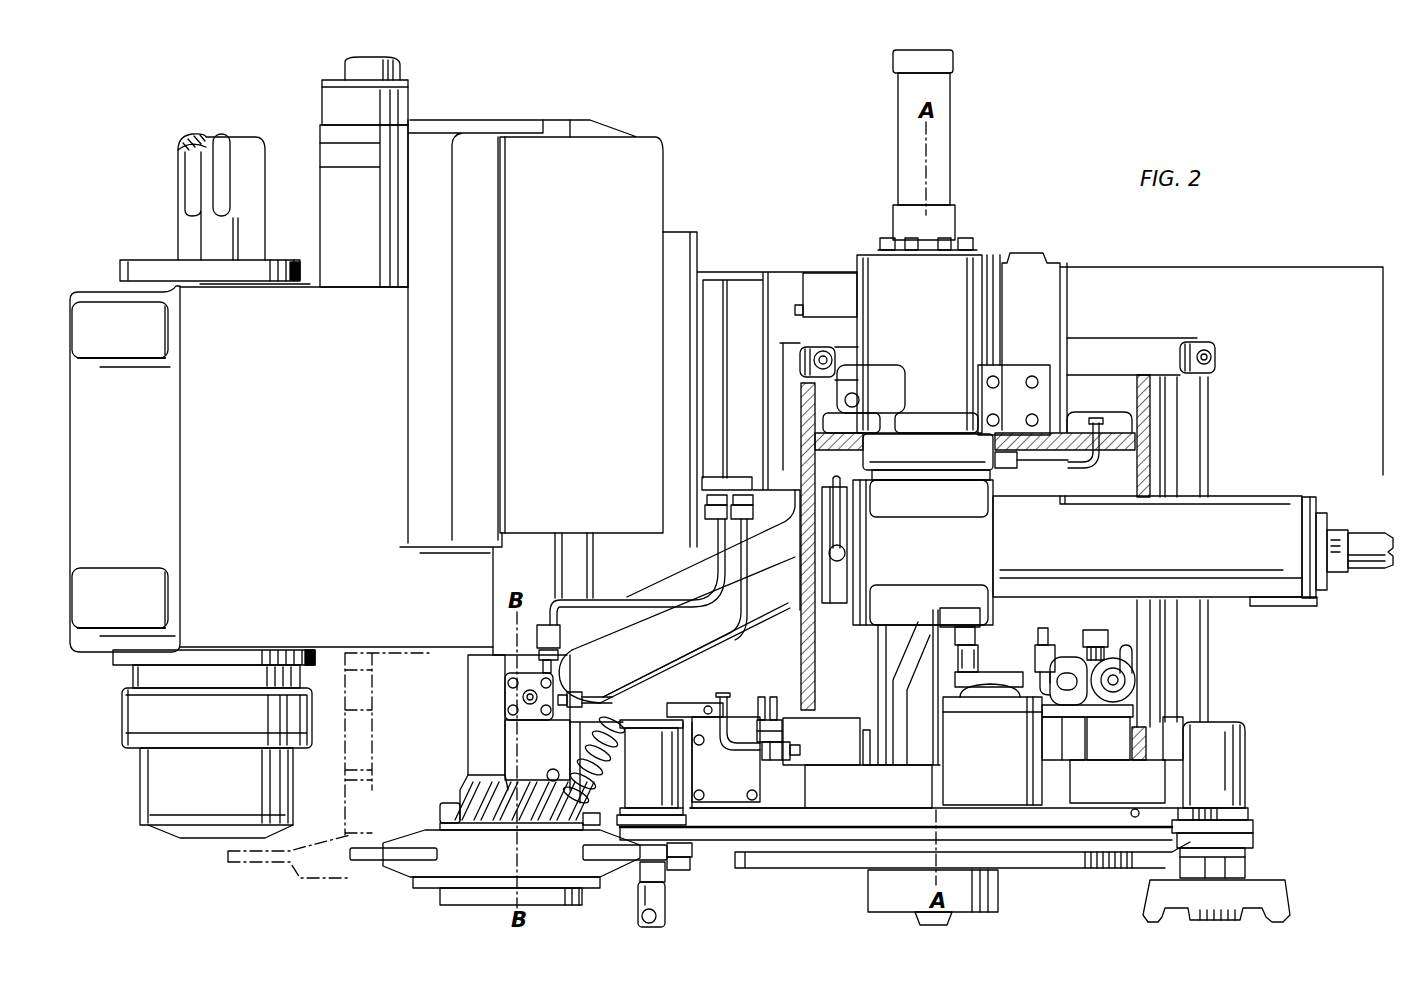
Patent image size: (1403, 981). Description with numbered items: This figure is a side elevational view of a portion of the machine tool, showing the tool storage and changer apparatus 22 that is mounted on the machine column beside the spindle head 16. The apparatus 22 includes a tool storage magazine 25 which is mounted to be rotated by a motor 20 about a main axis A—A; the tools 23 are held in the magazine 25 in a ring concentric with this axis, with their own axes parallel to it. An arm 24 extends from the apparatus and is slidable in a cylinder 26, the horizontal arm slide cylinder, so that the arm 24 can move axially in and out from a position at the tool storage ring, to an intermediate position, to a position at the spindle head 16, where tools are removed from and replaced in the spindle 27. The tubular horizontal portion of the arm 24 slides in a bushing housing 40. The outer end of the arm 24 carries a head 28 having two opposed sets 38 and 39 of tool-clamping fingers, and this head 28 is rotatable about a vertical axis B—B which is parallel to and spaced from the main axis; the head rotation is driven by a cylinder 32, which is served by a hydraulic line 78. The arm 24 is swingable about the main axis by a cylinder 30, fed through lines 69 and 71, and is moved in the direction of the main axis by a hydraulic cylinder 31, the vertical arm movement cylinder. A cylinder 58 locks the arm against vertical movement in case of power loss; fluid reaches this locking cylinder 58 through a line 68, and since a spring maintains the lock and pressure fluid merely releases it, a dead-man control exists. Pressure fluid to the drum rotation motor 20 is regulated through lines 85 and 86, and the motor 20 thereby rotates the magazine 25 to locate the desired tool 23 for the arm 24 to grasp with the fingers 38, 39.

The spindle head 16 is at (625, 228).
The motor 20 is at (835, 725).
The tool storage and changer apparatus 22 is at (979, 266).
The tools 23 is at (672, 905).
The arm 24 is at (650, 645).
The tool storage magazine 25 is at (1085, 842).
The cylinder 26 is at (1372, 543).
The spindle 27 is at (170, 793).
The head 28 is at (520, 742).
The cylinder 30 is at (1037, 392).
The hydraulic cylinder 31 is at (953, 142).
The cylinder 32 is at (507, 697).
The set of tool-clamping fingers 38 is at (368, 862).
The set of tool-clamping fingers 39 is at (612, 860).
The bushing housing 40 is at (1235, 523).
The cylinder 58 is at (927, 456).
The line 68 is at (1070, 463).
The line 69 is at (726, 697).
The line 71 is at (773, 713).
The line 78 is at (603, 700).
The line 85 is at (1048, 640).
The line 86 is at (1127, 642).